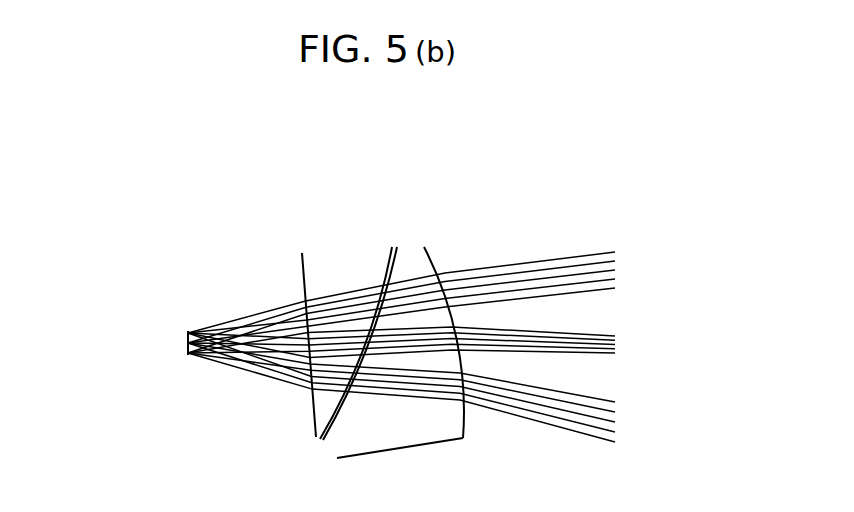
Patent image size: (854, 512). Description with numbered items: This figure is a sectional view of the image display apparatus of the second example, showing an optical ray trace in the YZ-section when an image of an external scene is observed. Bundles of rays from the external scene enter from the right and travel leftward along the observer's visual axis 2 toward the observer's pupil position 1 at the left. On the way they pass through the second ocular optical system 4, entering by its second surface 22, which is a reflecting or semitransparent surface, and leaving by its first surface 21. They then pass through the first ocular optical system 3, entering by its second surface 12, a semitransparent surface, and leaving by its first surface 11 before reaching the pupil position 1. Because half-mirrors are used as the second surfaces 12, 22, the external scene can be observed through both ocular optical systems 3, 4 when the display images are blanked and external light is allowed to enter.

The observer's pupil position 1 is at (188, 358).
The observer's visual axis 2 is at (285, 343).
The first ocular optical system 3 is at (317, 314).
The second ocular optical system 4 is at (422, 325).
The first surface of the first ocular optical system 11 is at (302, 267).
The second surface of the first ocular optical system 12 is at (388, 255).
The first surface of the second ocular optical system 21 is at (396, 255).
The second surface of the second ocular optical system 22 is at (427, 258).